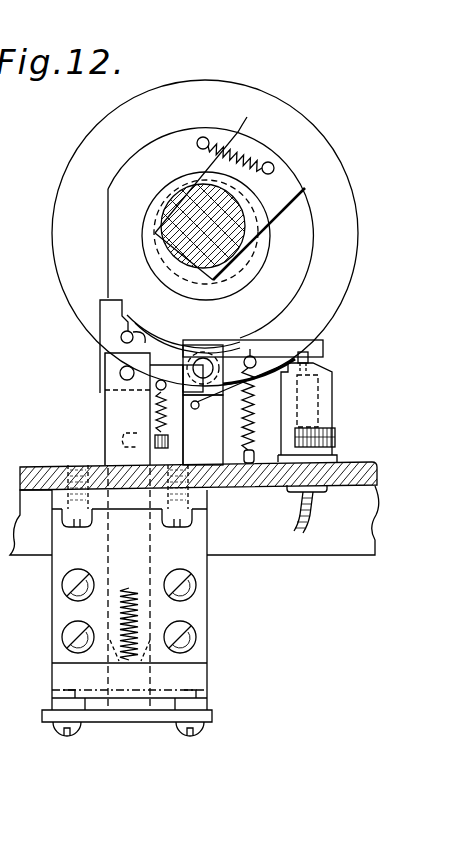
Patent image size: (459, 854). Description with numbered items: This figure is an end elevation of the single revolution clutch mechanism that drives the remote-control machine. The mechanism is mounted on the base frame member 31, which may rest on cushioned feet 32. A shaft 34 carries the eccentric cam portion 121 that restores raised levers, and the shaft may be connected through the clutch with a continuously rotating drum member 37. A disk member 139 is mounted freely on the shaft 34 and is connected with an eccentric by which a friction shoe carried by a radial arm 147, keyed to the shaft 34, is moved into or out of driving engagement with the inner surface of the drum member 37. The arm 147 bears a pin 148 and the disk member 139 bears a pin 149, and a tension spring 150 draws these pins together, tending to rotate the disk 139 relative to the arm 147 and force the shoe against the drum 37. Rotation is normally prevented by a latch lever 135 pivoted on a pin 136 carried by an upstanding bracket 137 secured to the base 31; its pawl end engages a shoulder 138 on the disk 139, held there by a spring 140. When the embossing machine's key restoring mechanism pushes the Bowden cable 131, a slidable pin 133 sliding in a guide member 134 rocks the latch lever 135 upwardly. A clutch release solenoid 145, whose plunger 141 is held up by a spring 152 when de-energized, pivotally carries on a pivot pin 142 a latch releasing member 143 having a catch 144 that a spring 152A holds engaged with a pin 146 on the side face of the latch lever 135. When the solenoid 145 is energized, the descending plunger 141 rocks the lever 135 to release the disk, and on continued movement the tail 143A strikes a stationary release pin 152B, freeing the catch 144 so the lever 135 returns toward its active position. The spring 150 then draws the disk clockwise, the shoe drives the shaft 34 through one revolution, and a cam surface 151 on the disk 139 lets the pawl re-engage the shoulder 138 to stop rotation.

The base frame member 31 is at (353, 462).
The cushioned feet 32 is at (328, 491).
The shaft 34 is at (245, 266).
The drum member 37 is at (63, 170).
The eccentric cam portion 121 is at (212, 203).
The Bowden cable 131 is at (318, 508).
The slidable pin 133 is at (332, 393).
The guide member 134 is at (332, 408).
The latch lever 135 is at (324, 343).
The pin 136 is at (207, 362).
The upstanding bracket 137 is at (107, 297).
The shoulder 138 is at (150, 314).
The disk member 139 is at (308, 253).
The spring 140 is at (240, 436).
The plunger 141 is at (66, 409).
The pivot pin 142 is at (80, 383).
The latch releasing member 143 is at (100, 353).
The tail 143A is at (158, 388).
The catch 144 is at (146, 343).
The clutch release solenoid 145 is at (209, 592).
The pin 146 is at (100, 337).
The radial arm 147 is at (282, 221).
The pin 148 is at (273, 165).
The pin 149 is at (197, 147).
The tension spring 150 is at (208, 166).
The cam surface 151 is at (108, 230).
The spring 152 is at (140, 613).
The spring 152A is at (208, 418).
The stationary release pin 152B is at (248, 354).